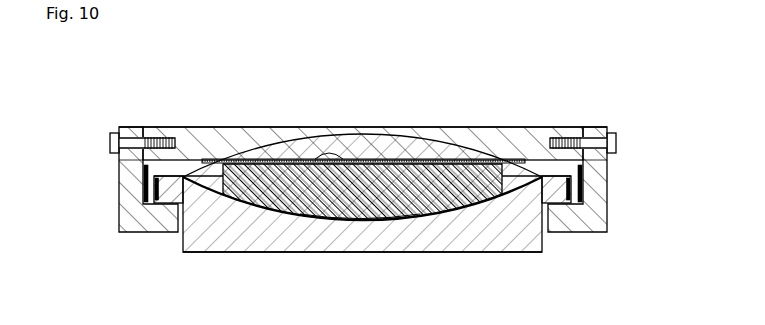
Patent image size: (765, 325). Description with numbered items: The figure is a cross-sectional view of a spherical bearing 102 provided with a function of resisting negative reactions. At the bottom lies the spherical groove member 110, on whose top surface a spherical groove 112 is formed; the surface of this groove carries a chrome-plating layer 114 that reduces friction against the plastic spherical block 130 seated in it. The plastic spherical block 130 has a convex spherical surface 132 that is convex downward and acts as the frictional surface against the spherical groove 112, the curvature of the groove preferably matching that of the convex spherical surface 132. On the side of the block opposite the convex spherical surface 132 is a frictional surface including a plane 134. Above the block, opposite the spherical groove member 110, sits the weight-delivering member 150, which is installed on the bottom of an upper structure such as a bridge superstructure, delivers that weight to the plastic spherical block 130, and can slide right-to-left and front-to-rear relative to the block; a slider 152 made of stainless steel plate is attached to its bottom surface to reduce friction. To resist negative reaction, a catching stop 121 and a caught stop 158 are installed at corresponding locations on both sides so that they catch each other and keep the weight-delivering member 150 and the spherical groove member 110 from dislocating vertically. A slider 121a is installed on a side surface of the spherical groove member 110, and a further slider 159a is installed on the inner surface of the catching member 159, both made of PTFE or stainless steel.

The optical device 102 is at (532, 102).
The spherical groove member 110 is at (505, 240).
The spherical groove 112 is at (480, 314).
The chrome-plating layer 114 is at (212, 180).
The catching stop 121 is at (166, 133).
The slider 121a is at (156, 186).
The plastic spherical block 130 is at (365, 187).
The convex spherical surface 132 is at (358, 222).
The plane 134 is at (310, 163).
The weight-delivering member 150 is at (442, 142).
The slider 152 is at (287, 160).
The caught stop 158 is at (165, 200).
The catching member 159 is at (114, 220).
The slider 159a is at (146, 168).